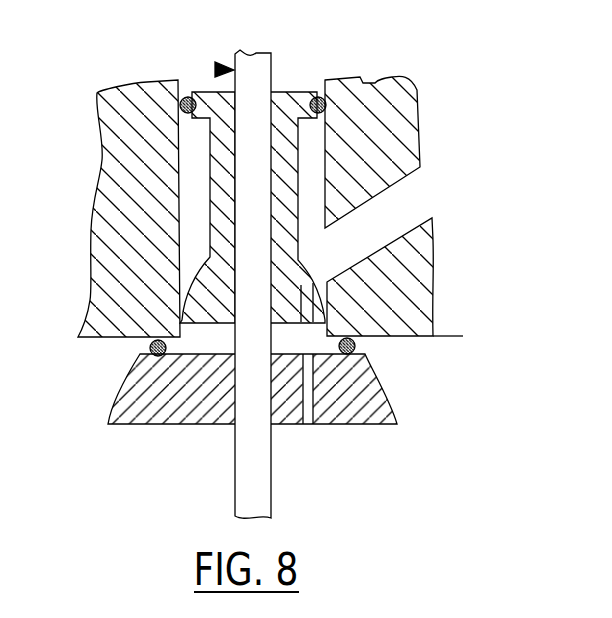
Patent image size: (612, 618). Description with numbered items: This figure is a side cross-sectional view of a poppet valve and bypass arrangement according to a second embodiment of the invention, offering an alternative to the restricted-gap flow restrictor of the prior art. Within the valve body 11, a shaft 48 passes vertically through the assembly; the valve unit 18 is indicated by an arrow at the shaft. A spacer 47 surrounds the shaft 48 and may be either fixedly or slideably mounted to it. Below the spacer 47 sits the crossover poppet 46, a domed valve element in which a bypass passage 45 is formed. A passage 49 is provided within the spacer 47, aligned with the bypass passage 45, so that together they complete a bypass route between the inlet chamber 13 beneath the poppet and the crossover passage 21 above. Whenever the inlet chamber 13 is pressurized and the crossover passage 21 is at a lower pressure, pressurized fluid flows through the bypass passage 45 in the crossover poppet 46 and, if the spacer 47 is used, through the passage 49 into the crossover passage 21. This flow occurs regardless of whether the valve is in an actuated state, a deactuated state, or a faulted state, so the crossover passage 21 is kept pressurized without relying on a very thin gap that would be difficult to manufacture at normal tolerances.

The valve body 11 is at (398, 100).
The inlet chamber 13 is at (384, 484).
The valve unit 18 is at (220, 69).
The crossover passage 21 is at (365, 232).
The bypass passage 45 is at (304, 427).
The crossover poppet 46 is at (383, 387).
The spacer 47 is at (208, 224).
The shaft 48 is at (263, 73).
The passage 49 is at (302, 285).